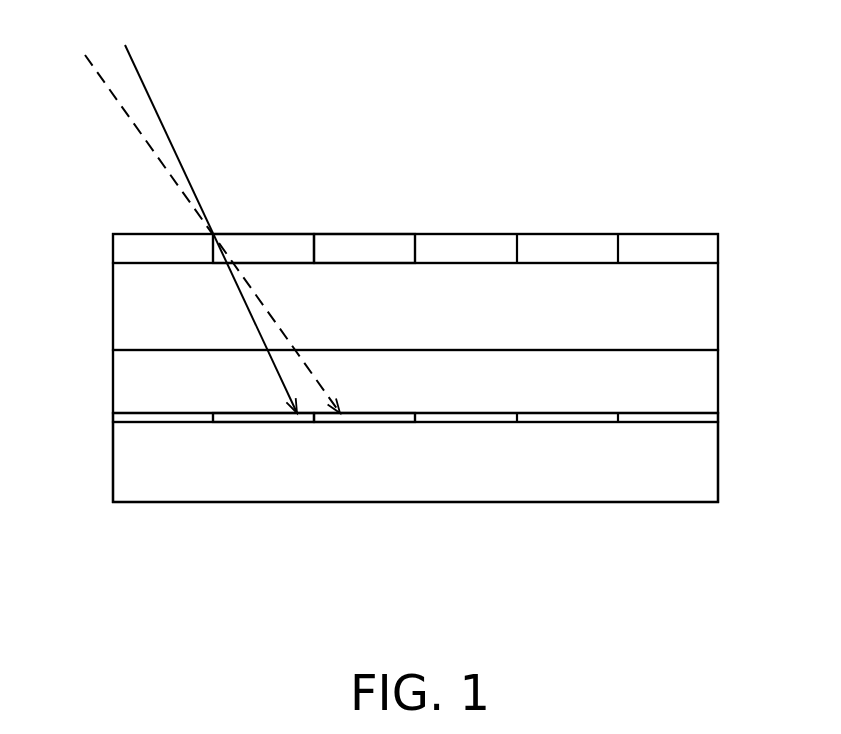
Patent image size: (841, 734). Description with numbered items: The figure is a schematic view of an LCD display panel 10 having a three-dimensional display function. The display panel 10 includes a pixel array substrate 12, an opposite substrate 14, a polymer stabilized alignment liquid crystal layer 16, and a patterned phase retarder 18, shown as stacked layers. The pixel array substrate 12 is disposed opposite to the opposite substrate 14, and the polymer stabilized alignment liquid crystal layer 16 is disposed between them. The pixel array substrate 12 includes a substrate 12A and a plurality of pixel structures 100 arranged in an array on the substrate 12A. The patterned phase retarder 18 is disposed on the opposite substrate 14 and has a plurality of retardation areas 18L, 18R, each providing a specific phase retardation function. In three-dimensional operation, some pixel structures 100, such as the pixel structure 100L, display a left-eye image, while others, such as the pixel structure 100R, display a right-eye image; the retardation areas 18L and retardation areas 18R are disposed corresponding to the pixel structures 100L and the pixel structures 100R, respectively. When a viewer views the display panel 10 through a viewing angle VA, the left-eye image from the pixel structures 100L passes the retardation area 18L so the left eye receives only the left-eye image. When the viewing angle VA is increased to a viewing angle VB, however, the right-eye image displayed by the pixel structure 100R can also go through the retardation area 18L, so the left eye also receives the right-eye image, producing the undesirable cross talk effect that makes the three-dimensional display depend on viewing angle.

The display panel 10 is at (793, 622).
The pixel array substrate 12 is at (730, 415).
The substrate 12A is at (600, 470).
The opposite substrate 14 is at (713, 325).
The polymer stabilized alignment liquid crystal layer 16 is at (713, 385).
The patterned phase retarder 18 is at (730, 236).
The retardation area 18L is at (262, 243).
The retardation area 18R is at (362, 243).
The pixel structures 100 is at (415, 503).
The pixel structure 100L is at (270, 418).
The pixel structure 100R is at (360, 418).
The viewing angle VA is at (143, 83).
The viewing angle VB is at (118, 98).